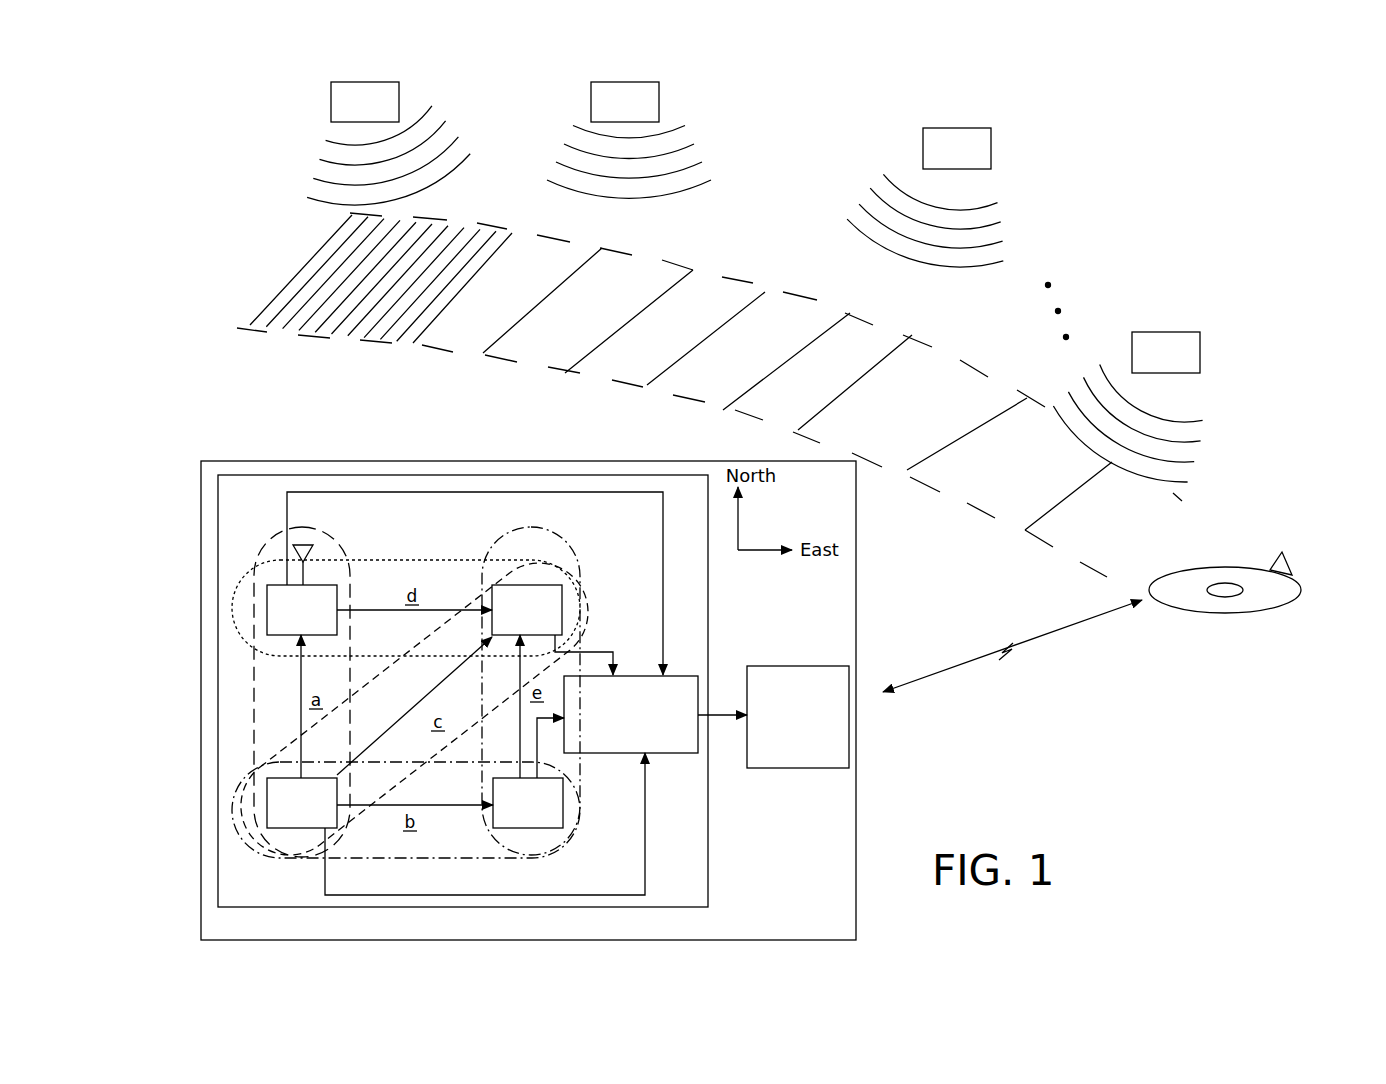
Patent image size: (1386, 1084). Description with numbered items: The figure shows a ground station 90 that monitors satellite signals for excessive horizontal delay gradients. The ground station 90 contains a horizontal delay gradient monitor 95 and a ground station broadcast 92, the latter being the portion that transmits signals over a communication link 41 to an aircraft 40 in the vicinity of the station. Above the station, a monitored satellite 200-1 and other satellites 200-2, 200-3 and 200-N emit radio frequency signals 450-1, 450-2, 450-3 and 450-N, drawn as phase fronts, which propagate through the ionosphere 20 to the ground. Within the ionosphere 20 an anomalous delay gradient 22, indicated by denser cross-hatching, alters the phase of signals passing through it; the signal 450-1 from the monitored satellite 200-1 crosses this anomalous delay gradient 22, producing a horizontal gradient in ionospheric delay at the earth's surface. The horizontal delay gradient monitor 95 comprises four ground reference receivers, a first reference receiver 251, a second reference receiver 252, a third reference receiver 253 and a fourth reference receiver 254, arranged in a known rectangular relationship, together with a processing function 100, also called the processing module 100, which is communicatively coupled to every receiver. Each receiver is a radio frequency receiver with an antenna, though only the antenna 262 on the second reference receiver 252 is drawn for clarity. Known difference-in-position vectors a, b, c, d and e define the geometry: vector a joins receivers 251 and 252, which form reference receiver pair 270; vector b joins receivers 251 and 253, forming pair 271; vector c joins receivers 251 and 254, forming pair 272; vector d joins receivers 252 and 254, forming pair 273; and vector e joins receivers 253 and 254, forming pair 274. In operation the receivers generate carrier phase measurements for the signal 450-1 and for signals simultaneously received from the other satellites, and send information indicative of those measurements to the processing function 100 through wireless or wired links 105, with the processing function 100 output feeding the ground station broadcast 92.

The ionosphere 20 is at (653, 255).
The anomalous delay gradient 22 is at (413, 353).
The aircraft 40 is at (1200, 614).
The communication link 41 is at (1031, 645).
The ground station 90 is at (374, 934).
The ground station broadcast 92 is at (786, 759).
The horizontal delay gradient monitor 95 is at (708, 645).
The processing function 100 is at (618, 745).
The wireless or wired links 105 is at (663, 598).
The monitored satellite 200-1 is at (365, 102).
The satellite 200-2 is at (625, 102).
The satellite 200-3 is at (957, 148).
The satellite 200-N is at (1166, 352).
The radio frequency signals 450-1 is at (305, 132).
The radio frequency signals 450-2 is at (710, 122).
The radio frequency signals 450-3 is at (1004, 202).
The radio frequency signals 450-N is at (1209, 422).
The first reference receiver 251 is at (308, 828).
The second reference receiver 252 is at (338, 600).
The third reference receiver 253 is at (540, 828).
The fourth reference receiver 254 is at (543, 585).
The antenna 262 is at (292, 557).
The reference receiver pair 270 is at (347, 549).
The reference receiver pair 271 is at (393, 858).
The reference receiver pair 272 is at (587, 594).
The reference receiver pair 273 is at (411, 560).
The reference receiver pair 274 is at (512, 530).